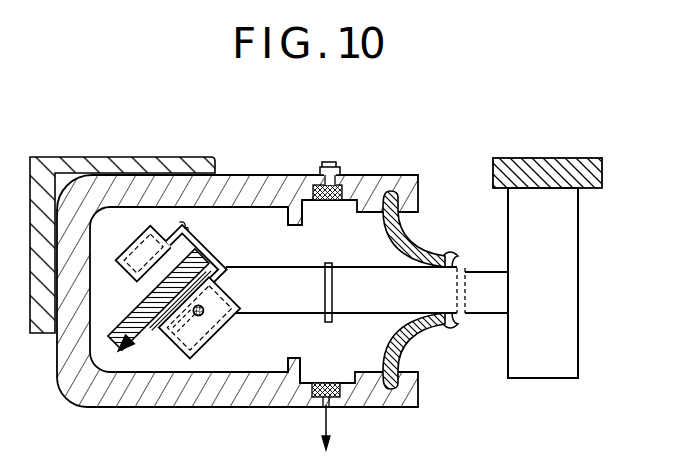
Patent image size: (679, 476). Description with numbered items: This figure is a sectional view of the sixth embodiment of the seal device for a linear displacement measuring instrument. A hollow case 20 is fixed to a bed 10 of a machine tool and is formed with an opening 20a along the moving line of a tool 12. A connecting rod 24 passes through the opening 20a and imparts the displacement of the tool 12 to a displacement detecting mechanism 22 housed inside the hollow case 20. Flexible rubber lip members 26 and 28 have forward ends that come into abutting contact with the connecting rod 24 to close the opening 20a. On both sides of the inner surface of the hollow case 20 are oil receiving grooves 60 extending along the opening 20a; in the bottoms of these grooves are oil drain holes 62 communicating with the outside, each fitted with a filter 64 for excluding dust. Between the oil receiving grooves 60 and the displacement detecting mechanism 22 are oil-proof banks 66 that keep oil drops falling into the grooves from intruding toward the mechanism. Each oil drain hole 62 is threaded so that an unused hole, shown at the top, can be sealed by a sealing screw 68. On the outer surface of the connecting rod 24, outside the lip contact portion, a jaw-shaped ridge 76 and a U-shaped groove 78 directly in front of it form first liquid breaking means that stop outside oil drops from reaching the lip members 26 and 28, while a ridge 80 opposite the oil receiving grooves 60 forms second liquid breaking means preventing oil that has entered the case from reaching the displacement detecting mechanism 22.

The bed 10 is at (216, 170).
The tool 12 is at (595, 190).
The hollow case 20 is at (283, 175).
The opening 20a is at (410, 232).
The displacement detecting mechanism 22 is at (257, 237).
The connecting rod 24 is at (483, 286).
The lip member 26 is at (413, 236).
The lip member 28 is at (405, 325).
The oil receiving groove 60 is at (352, 228).
The oil drain hole 62 is at (357, 184).
The filter 64 is at (321, 203).
The oil-proof bank 66 is at (293, 223).
The sealing screw 68 is at (334, 172).
The jaw-shaped ridge 76 is at (453, 327).
The U-shaped groove 78 is at (464, 318).
The ridge 80 is at (331, 322).